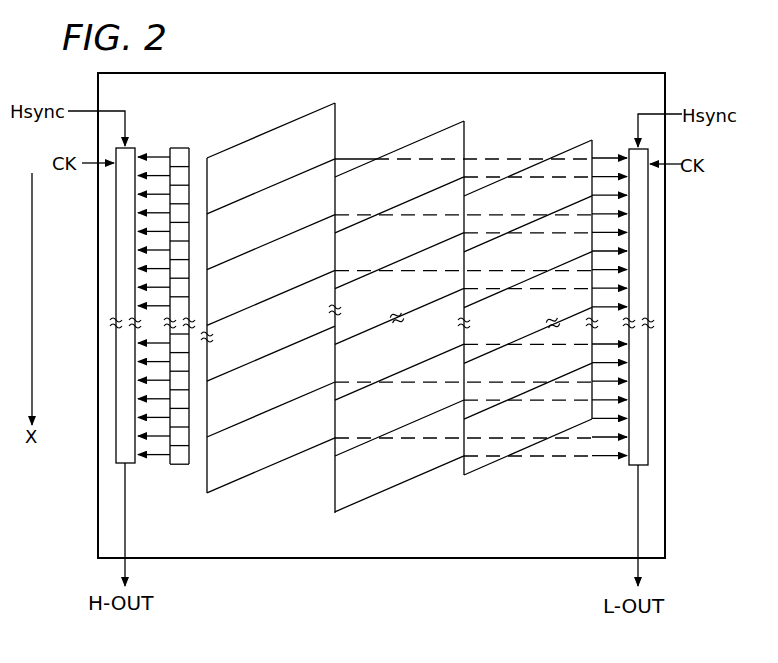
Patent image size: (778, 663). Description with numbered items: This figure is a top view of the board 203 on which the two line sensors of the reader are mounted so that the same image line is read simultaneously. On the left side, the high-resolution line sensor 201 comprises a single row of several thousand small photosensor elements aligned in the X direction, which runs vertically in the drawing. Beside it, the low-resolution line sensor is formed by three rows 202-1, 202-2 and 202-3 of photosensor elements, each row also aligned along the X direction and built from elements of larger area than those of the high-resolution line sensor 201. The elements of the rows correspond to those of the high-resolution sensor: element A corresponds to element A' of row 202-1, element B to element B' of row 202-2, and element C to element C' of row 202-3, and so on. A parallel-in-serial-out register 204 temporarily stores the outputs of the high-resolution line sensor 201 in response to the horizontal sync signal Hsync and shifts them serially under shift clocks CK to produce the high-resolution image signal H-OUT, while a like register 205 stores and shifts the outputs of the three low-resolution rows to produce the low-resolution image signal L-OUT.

The high-resolution line sensor 201 is at (180, 465).
The first row of photosensor elements 202-1 is at (245, 478).
The second row of photosensor elements 202-2 is at (388, 488).
The third row of photosensor elements 202-3 is at (498, 460).
The board 203 is at (498, 551).
The parallel-in-serial-out register 204 is at (116, 432).
The parallel-in-serial-out register 205 is at (648, 437).